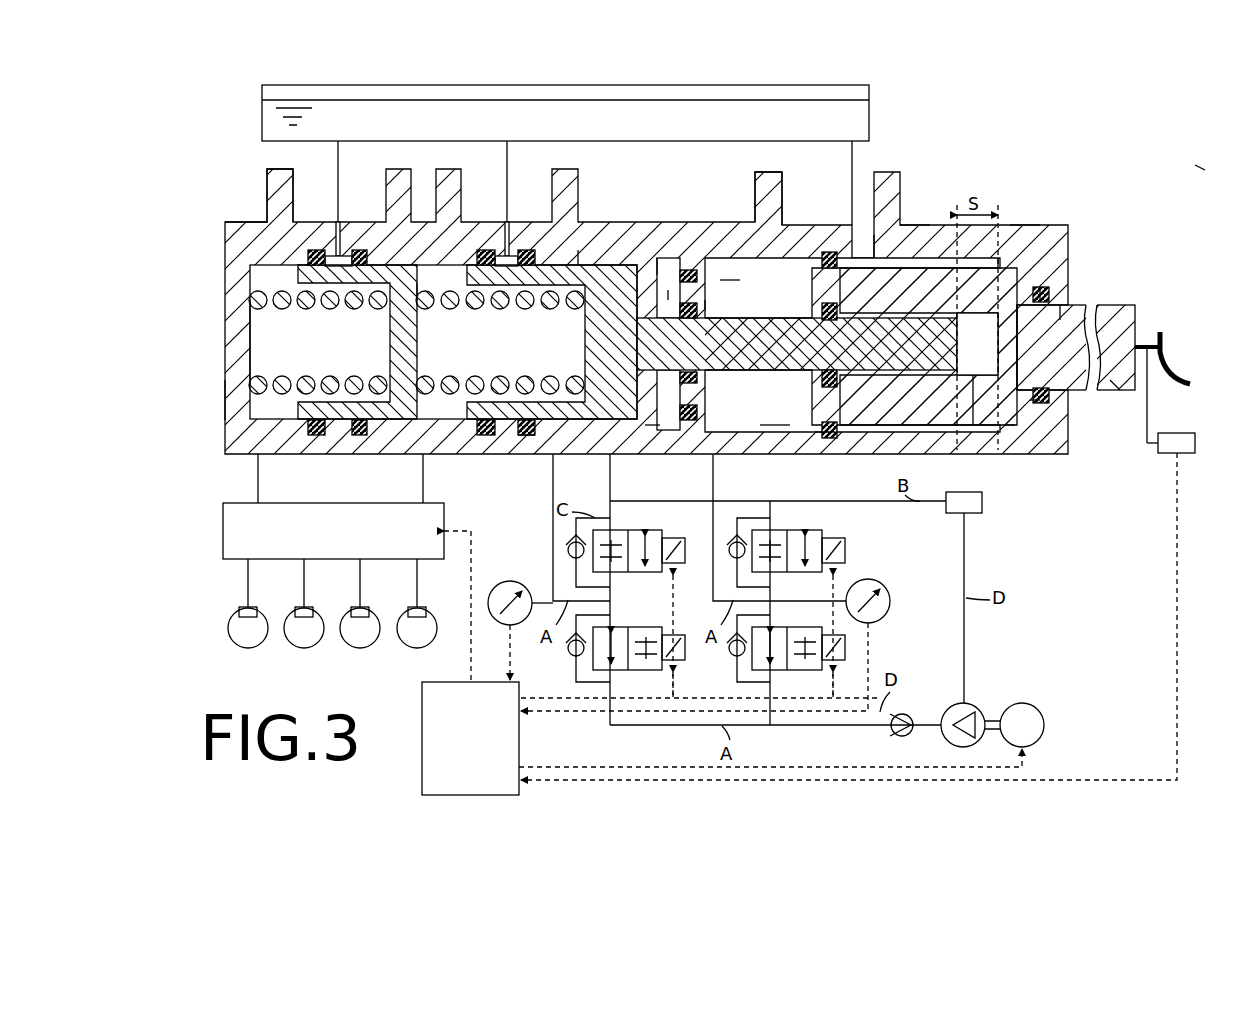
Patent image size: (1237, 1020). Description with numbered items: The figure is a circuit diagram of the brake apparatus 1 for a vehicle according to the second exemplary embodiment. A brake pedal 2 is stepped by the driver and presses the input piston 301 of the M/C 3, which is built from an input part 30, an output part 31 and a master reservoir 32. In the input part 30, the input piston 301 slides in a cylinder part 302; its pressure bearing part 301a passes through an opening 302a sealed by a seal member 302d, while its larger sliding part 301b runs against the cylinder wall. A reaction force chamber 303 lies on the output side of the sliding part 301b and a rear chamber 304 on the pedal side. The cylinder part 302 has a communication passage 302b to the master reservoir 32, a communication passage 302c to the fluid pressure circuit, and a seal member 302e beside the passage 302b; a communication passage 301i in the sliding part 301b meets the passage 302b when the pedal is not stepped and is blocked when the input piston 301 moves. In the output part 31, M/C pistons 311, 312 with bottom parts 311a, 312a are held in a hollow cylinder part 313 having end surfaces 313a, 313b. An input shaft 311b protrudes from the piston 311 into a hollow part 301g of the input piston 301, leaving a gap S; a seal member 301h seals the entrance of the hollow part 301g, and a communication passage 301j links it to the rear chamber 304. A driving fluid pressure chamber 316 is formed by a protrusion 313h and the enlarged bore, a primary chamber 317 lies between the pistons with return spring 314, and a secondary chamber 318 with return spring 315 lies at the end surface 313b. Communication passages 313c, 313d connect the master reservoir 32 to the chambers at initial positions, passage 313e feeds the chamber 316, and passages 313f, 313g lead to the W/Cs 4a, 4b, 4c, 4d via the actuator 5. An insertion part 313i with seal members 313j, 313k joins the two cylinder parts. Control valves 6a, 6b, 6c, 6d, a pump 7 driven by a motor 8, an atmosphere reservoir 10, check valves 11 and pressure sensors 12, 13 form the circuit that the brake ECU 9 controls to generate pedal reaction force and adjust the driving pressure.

The brake apparatus 1 is at (1204, 163).
The brake pedal 2 is at (1196, 371).
The M/C 3 is at (928, 186).
The W/C 4a is at (264, 610).
The W/C 4b is at (320, 610).
The W/C 4c is at (376, 610).
The W/C 4d is at (433, 610).
The actuator for brake fluid pressure control 5 is at (222, 531).
The first control valve 6a is at (792, 628).
The second control valve 6b is at (632, 628).
The third control valve 6c is at (792, 531).
The fourth control valve 6d is at (632, 531).
The pump 7 is at (968, 703).
The motor 8 is at (1022, 703).
The brake ECU 9 is at (421, 712).
The atmosphere reservoir 10 is at (960, 514).
The check valve 11 is at (578, 560).
The first pressure sensor 12 is at (890, 603).
The second pressure sensor 13 is at (500, 583).
The input part 30 is at (1025, 222).
The output part 31 is at (243, 210).
The master reservoir 32 is at (870, 105).
The input piston 301 is at (1075, 390).
The pressure bearing part 301a is at (1115, 395).
The sliding part 301b is at (1000, 258).
The hollow part 301g is at (1035, 402).
The seal member 301h is at (740, 300).
The communication passage 301i is at (775, 235).
The communication passage 301j is at (975, 402).
The cylinder part 302 is at (1048, 240).
The opening 302a is at (1062, 318).
The communication passage 302b is at (835, 258).
The communication passage 302c is at (770, 435).
The seal member 302d is at (1050, 290).
The seal member 302e is at (806, 256).
The reaction force chamber 303 is at (745, 282).
The rear chamber 304 is at (1010, 428).
The M/C piston 311 is at (612, 425).
The bottom part 311a is at (592, 430).
The input shaft 311b is at (830, 445).
The M/C piston 312 is at (403, 420).
The bottom part 312a is at (420, 290).
The cylinder part 313 is at (255, 245).
The one end surface 313a is at (717, 466).
The other end surface 313b is at (232, 395).
The communication passage 313c is at (509, 254).
The communication passage 313d is at (342, 254).
The communication passage 313e is at (551, 480).
The communication passage 313f is at (426, 468).
The communication passage 313g is at (290, 484).
The protrusion 313h is at (614, 468).
The insertion part 313i is at (655, 272).
The seal member 313j is at (662, 300).
The seal member 313k is at (580, 266).
The return spring 314 is at (522, 438).
The return spring 315 is at (333, 400).
The driving fluid pressure chamber 316 is at (652, 430).
The primary chamber 317 is at (468, 350).
The secondary chamber 318 is at (265, 343).
The gap S is at (977, 327).